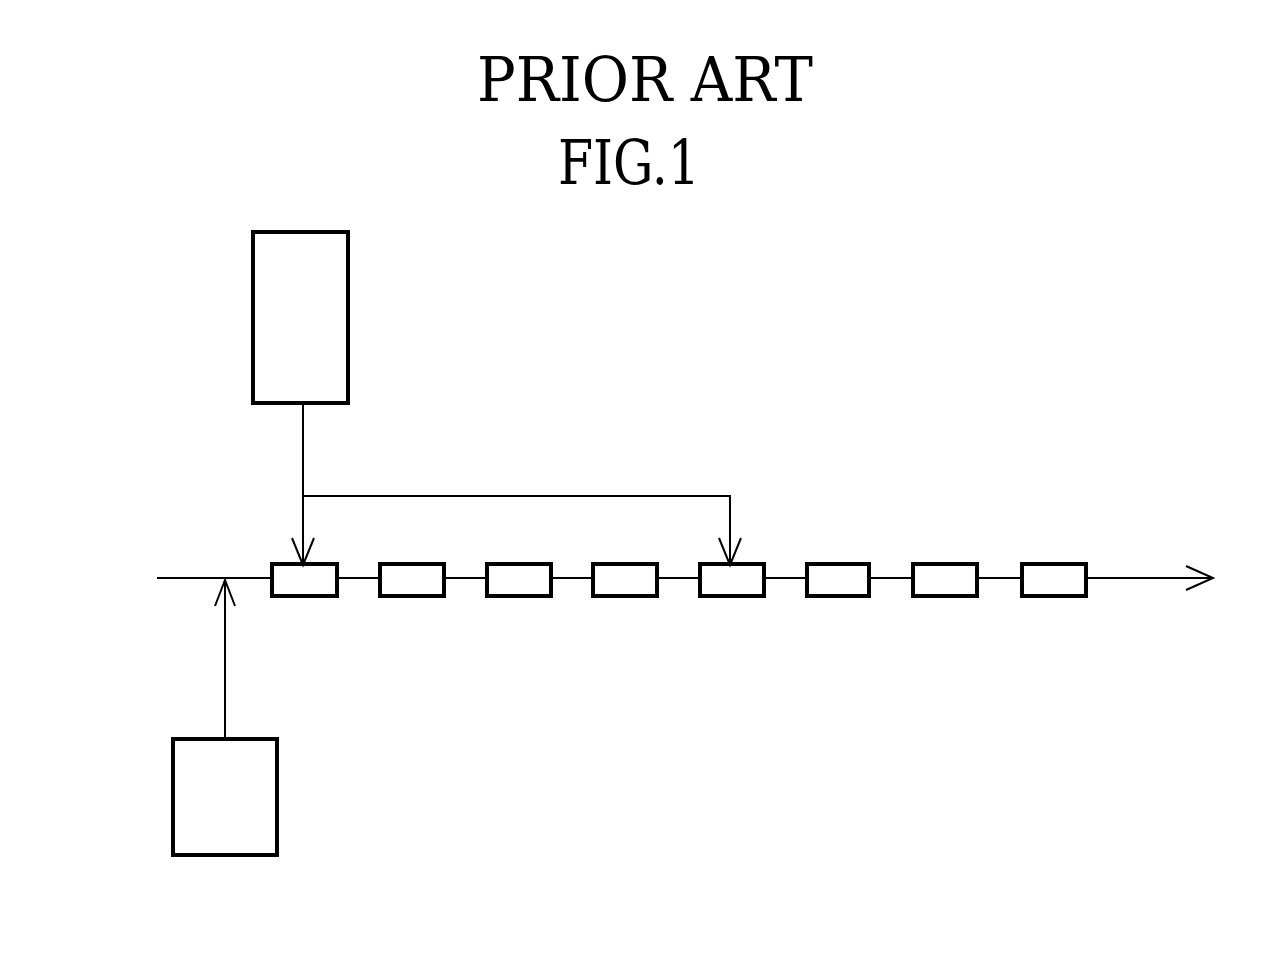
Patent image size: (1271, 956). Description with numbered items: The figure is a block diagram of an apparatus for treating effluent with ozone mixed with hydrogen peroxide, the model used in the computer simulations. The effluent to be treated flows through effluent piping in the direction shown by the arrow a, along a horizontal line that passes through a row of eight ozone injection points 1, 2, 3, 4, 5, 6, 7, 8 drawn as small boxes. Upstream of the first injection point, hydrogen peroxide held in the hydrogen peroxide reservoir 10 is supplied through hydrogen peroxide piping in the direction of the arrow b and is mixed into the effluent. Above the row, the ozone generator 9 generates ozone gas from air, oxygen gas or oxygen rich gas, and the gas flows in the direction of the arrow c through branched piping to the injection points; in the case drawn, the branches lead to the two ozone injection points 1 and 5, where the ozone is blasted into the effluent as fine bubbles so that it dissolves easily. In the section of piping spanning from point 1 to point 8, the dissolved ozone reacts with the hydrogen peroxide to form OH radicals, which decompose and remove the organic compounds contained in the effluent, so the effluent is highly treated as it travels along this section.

The ozone injection point 1 is at (306, 596).
The ozone injection point 2 is at (413, 596).
The ozone injection point 3 is at (520, 596).
The ozone injection point 4 is at (626, 596).
The ozone injection point 5 is at (733, 596).
The ozone injection point 6 is at (839, 596).
The ozone injection point 7 is at (946, 596).
The ozone injection point 8 is at (1055, 596).
The ozone generator 9 is at (348, 327).
The hydrogen peroxide reservoir 10 is at (277, 800).
The arrow indicating effluent flow direction a is at (183, 578).
The arrow indicating hydrogen peroxide flow direction b is at (225, 698).
The arrow indicating ozone gas flow direction c is at (303, 458).